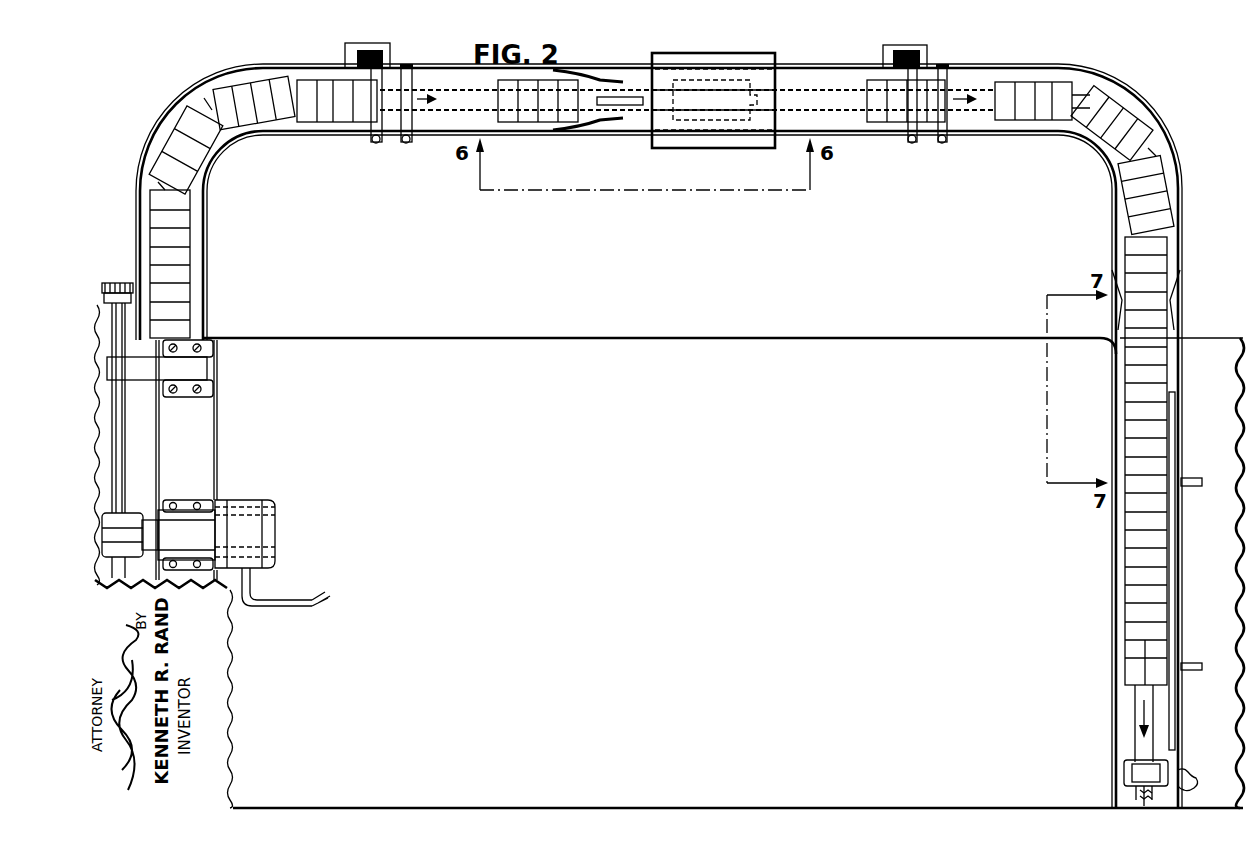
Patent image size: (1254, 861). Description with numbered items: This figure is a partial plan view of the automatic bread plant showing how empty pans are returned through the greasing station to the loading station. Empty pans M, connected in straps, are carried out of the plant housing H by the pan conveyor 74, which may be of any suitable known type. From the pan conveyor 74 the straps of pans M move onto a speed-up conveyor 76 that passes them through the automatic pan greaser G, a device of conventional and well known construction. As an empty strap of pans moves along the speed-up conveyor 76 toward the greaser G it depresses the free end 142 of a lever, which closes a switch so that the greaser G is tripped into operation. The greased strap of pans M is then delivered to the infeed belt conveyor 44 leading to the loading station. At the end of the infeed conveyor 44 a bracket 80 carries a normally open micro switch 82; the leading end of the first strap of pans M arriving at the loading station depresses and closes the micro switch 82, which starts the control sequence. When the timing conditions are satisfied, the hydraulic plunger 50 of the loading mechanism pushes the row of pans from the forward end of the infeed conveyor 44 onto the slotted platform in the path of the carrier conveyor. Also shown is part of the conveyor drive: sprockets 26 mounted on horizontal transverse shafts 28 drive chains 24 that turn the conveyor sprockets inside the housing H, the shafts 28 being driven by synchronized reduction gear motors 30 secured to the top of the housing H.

The chains 24 is at (118, 283).
The sprockets 26 is at (135, 297).
The horizontal transverse shafts 28 is at (115, 455).
The reduction gear motors 30 is at (240, 522).
The belt conveyor 44 is at (977, 88).
The plunger 50 is at (1173, 572).
The pan conveyor 74 is at (208, 102).
The speed-up conveyor 76 is at (448, 115).
The bracket 80 is at (1127, 785).
The micro switch 82 is at (1125, 763).
The free end of lever 142 is at (625, 97).
The pans M is at (243, 110).
The pan greaser G is at (640, 152).
The plant housing H is at (640, 326).